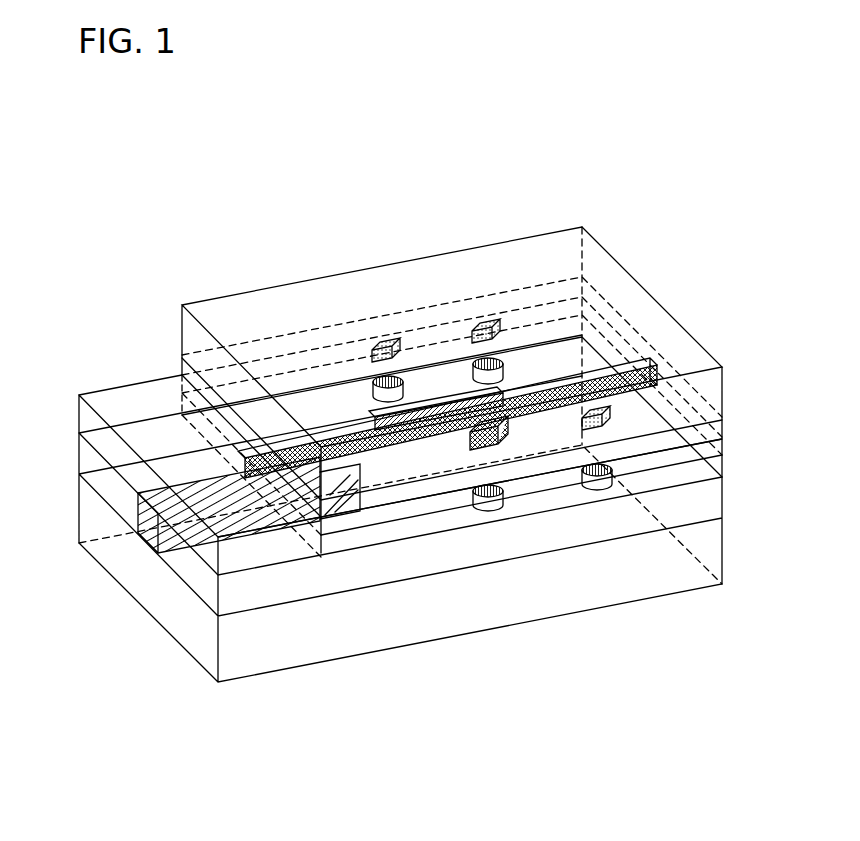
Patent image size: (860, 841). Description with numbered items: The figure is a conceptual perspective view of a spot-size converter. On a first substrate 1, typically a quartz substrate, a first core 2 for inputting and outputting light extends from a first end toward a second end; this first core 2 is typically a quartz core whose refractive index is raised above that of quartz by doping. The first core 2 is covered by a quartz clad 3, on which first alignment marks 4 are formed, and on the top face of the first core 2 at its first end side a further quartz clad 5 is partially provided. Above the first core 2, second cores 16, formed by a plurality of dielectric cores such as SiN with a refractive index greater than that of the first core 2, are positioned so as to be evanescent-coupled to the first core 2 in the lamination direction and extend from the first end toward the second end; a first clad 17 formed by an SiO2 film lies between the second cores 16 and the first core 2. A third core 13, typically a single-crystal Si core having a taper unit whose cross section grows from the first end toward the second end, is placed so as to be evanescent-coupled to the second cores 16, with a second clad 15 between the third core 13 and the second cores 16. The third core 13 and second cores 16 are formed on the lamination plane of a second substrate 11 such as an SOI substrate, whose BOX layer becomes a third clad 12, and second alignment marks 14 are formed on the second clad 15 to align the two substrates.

The first substrate 1 is at (92, 516).
The first core 2 is at (140, 534).
The quartz clad 3 is at (92, 462).
The first alignment marks 4 is at (598, 494).
The quartz clad 5 is at (92, 424).
The second substrate 11 is at (714, 384).
The third clad 12 is at (722, 421).
The third core 13 is at (655, 366).
The second alignment marks 14 is at (384, 336).
The second clad 15 is at (722, 441).
The second cores 16 is at (290, 452).
The first clad 17 is at (722, 458).